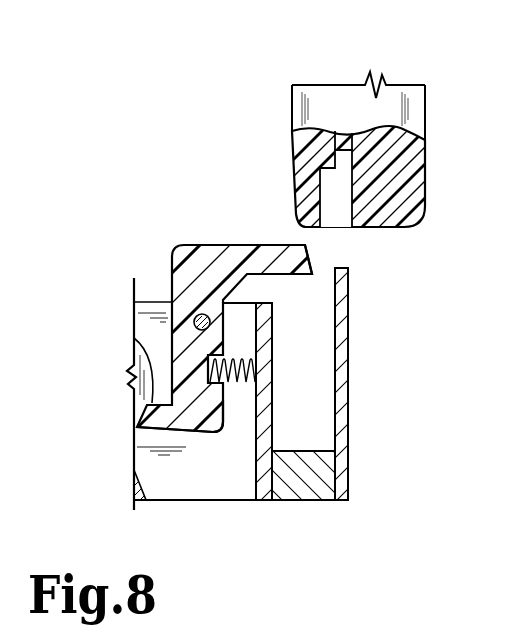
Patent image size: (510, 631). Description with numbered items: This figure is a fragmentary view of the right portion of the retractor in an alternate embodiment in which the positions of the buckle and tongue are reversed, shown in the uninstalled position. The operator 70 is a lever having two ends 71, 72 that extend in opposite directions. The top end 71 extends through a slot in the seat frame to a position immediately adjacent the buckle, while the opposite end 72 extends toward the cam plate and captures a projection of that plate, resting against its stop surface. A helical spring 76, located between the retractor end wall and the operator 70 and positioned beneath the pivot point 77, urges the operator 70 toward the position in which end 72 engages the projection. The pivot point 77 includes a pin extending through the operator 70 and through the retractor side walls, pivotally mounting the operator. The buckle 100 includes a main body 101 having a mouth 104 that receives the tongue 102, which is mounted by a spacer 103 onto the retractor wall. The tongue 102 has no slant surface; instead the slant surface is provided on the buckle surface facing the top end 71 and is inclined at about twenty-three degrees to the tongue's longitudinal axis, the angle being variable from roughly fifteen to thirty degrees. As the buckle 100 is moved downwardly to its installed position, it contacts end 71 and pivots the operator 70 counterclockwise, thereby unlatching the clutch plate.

The operator 70 is at (240, 244).
The end 71 is at (289, 245).
The end 72 is at (210, 433).
The helical spring 76 is at (240, 386).
The pivot point 77 is at (201, 313).
The buckle 100 is at (248, 118).
The main body 101 is at (407, 217).
The tongue 102 is at (348, 428).
The spacer 103 is at (315, 495).
The mouth 104 is at (341, 219).